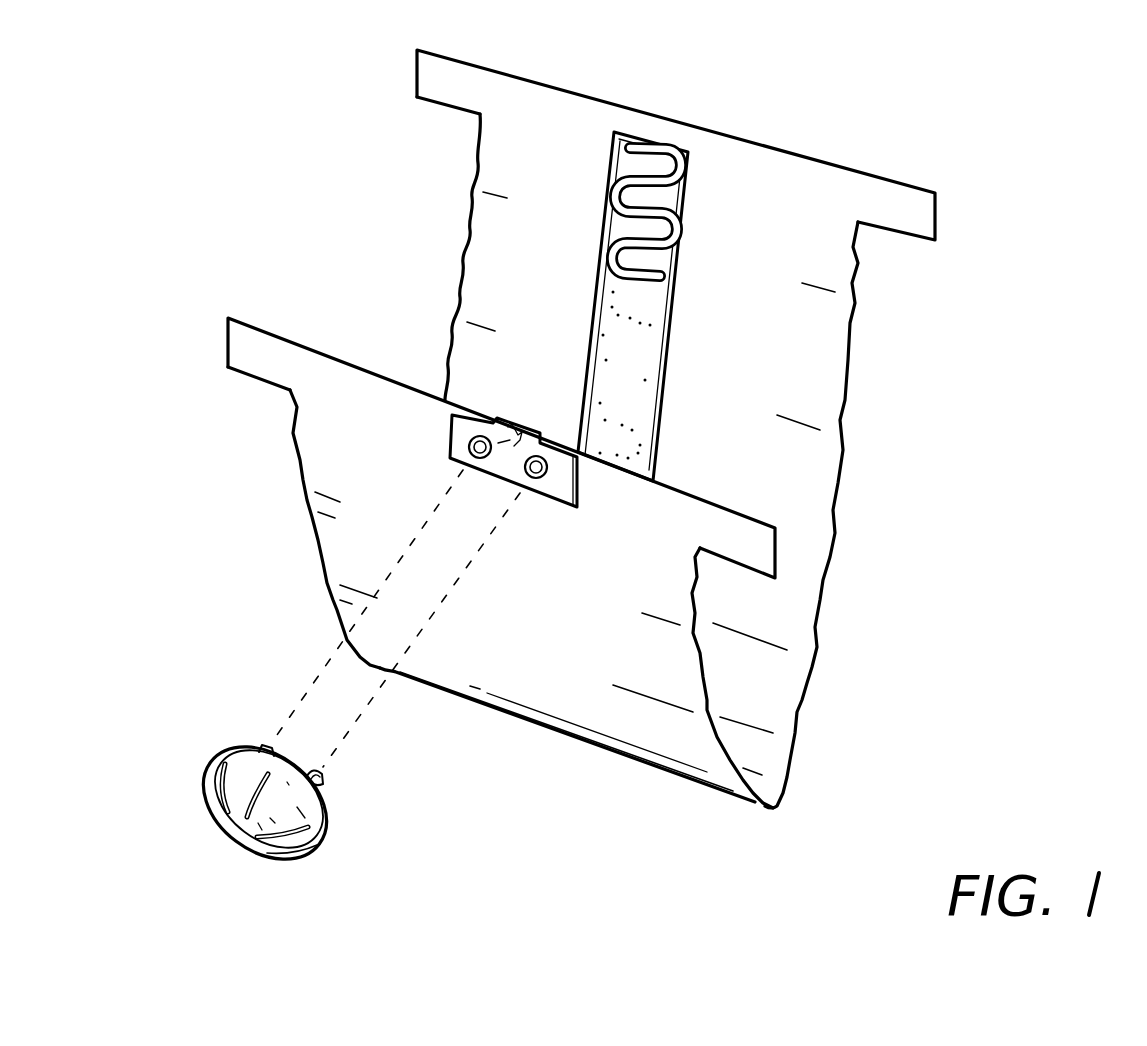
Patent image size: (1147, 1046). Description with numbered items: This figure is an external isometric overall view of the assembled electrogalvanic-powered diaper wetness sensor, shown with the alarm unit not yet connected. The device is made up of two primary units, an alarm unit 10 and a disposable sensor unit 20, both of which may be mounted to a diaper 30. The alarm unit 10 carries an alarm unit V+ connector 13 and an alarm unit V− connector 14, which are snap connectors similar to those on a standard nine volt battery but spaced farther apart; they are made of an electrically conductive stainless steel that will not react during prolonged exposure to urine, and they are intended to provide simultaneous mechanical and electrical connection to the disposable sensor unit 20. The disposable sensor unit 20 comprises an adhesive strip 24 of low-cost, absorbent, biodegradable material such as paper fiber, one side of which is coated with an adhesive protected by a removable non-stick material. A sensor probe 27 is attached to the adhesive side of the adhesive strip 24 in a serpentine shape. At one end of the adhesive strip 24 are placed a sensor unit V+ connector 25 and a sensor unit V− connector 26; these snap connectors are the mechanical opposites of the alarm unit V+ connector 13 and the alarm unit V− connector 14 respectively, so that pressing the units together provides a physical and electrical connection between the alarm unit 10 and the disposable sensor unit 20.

The alarm unit 10 is at (323, 848).
The alarm unit V+ connector 13 is at (265, 743).
The alarm unit V− connector 14 is at (323, 778).
The disposable sensor unit 20 is at (684, 275).
The adhesive strip 24 is at (688, 166).
The sensor unit V+ connector 25 is at (470, 448).
The sensor unit V− connector 26 is at (548, 474).
The sensor probe 27 is at (642, 172).
The diaper 30 is at (838, 483).